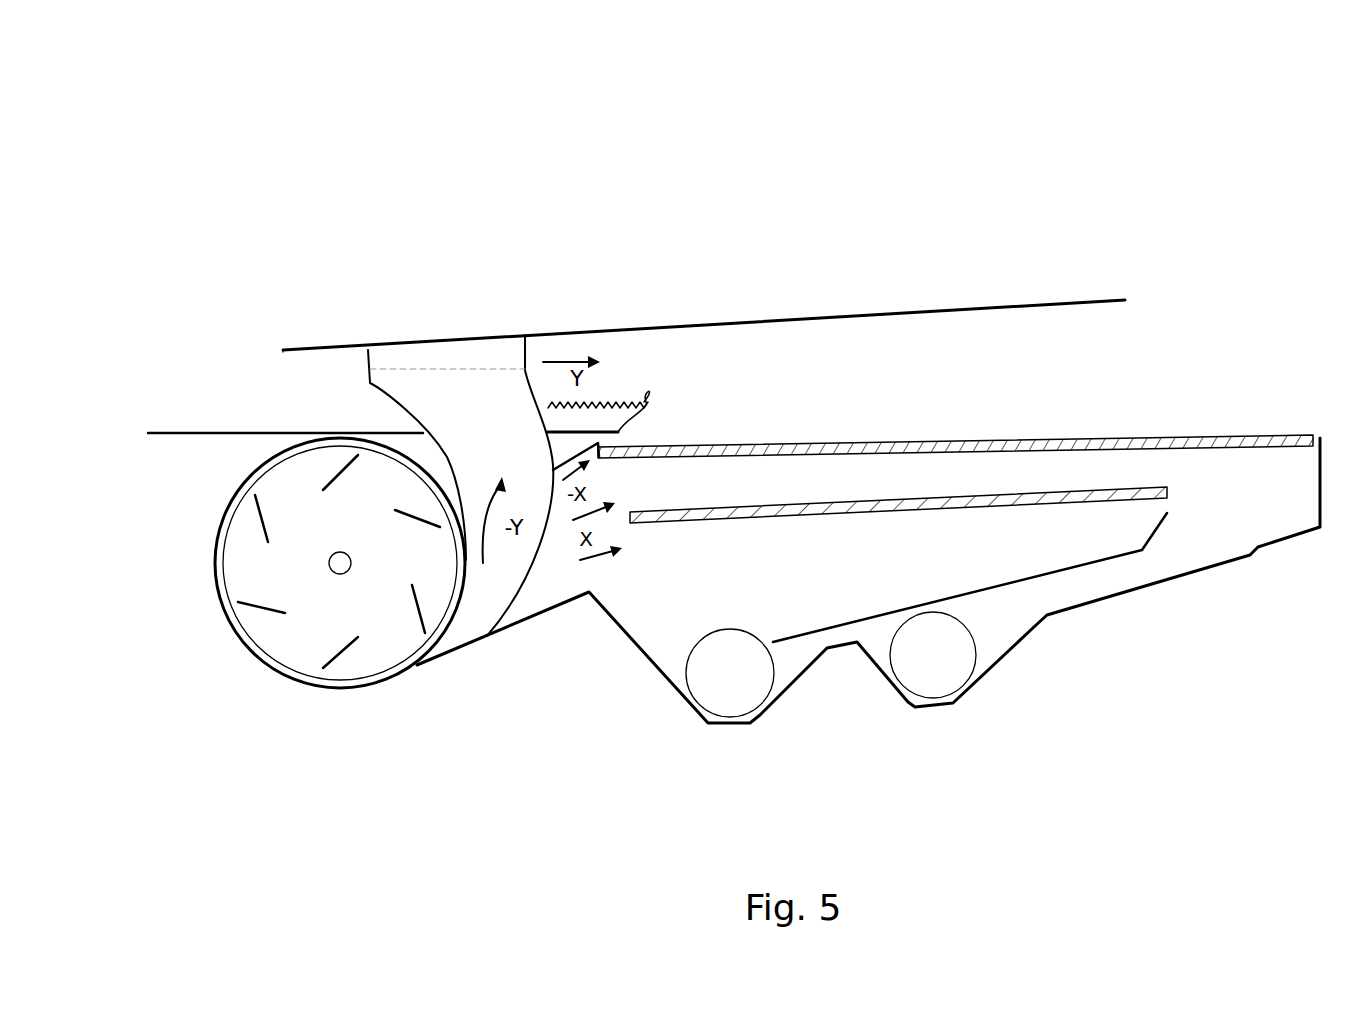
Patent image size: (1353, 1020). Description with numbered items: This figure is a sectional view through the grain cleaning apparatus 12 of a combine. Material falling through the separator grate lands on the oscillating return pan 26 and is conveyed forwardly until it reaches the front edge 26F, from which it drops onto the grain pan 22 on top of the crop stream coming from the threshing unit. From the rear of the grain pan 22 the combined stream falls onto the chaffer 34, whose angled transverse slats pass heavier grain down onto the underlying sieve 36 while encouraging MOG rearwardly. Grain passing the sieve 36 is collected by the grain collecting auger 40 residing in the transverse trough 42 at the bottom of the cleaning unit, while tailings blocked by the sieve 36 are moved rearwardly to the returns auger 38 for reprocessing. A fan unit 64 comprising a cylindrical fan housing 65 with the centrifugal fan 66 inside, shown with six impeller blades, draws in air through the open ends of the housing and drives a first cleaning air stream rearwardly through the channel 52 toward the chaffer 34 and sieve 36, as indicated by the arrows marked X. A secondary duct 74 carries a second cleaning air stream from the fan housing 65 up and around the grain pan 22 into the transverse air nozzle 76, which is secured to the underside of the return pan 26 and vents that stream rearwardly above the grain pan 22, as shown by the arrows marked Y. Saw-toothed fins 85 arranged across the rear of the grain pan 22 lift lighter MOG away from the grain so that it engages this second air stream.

The grain cleaning apparatus 12 is at (247, 133).
The grain pan 22 is at (187, 433).
The return pan 26 is at (1032, 305).
The front edge 26F is at (285, 350).
The chaffer 34 is at (1003, 452).
The sieve 36 is at (732, 515).
The returns auger 38 is at (965, 675).
The grain collecting auger 40 is at (720, 690).
The transverse trough 42 is at (777, 697).
The channel 52 is at (558, 583).
The fan unit 64 is at (296, 592).
The fan housing 65 is at (263, 663).
The fan 66 is at (348, 677).
The secondary duct 74 is at (483, 598).
The transverse air nozzle 76 is at (505, 347).
The fins 85 is at (650, 395).